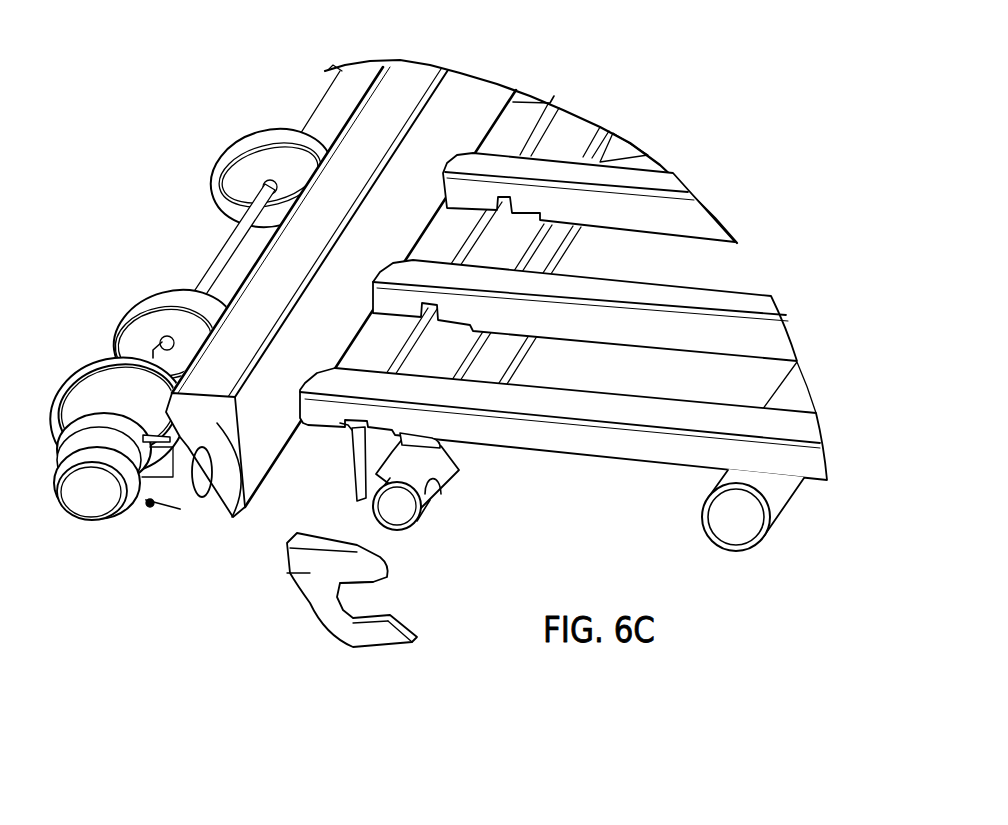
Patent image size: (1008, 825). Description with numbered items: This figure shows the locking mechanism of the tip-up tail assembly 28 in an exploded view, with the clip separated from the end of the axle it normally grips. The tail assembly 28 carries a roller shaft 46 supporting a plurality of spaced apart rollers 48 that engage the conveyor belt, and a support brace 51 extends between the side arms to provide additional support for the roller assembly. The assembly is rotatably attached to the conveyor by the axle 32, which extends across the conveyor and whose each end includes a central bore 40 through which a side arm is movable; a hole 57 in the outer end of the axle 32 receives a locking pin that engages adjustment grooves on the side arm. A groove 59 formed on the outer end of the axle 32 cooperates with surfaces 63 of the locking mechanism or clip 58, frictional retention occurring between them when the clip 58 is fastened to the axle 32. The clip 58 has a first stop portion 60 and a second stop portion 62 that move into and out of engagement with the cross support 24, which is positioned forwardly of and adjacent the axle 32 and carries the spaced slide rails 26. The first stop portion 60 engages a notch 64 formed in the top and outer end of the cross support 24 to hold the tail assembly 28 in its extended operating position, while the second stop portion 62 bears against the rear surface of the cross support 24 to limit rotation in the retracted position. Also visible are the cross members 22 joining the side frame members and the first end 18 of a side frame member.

The tip-up tail assembly 28 is at (140, 156).
The rollers 48 is at (262, 140).
The roller shaft 46 is at (97, 503).
The support brace 51 is at (407, 83).
The notch 64 is at (292, 430).
The slide rails 26 is at (667, 182).
The cross members 22 is at (780, 493).
The first end 18 is at (447, 467).
The central bore 40 is at (437, 497).
The groove 59 is at (445, 448).
The axle 32 is at (408, 517).
The cross support 24 is at (350, 457).
The hole 57 is at (386, 467).
The locking mechanism or clip 58 is at (353, 629).
The first stop portion 60 is at (297, 567).
The second stop portion 62 is at (393, 640).
The surfaces 63 is at (372, 583).